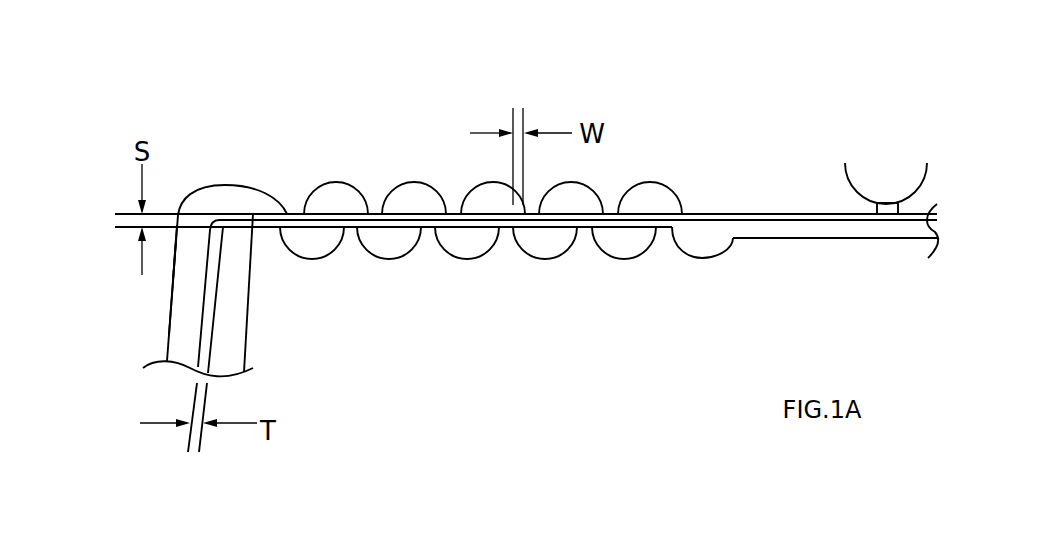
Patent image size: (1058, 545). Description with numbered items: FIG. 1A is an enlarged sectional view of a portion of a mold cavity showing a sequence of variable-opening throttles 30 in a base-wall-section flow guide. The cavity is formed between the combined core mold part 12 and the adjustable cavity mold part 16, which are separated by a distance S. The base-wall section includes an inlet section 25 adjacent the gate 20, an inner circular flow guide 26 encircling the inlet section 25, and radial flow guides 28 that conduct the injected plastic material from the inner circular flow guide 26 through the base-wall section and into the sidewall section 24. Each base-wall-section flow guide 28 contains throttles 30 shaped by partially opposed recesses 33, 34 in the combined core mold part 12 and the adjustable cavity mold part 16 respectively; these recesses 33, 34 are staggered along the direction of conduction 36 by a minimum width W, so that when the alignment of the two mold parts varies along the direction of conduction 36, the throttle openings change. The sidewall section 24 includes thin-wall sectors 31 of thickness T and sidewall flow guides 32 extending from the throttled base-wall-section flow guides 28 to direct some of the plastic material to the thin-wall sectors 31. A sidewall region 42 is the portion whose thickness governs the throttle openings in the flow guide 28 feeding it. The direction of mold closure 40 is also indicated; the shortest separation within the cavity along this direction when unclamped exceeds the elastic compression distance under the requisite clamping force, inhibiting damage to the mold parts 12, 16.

The combined core mold part 12 is at (605, 314).
The adjustable cavity mold part 16 is at (727, 164).
The gate 20 is at (887, 214).
The sidewall section 24 is at (164, 300).
The inlet section 25 is at (763, 238).
The inner circular flow guide 26 is at (695, 258).
The radial flow guide 28 is at (612, 170).
The variable-opening throttle 30 is at (289, 213).
The thin-wall sector 31 is at (212, 350).
The sidewall flow guide 32 is at (183, 263).
The recess in combined core mold part 33 is at (318, 247).
The recess in adjustable cavity mold part 34 is at (268, 197).
The direction of conduction 36 is at (365, 356).
The direction of mold closure 40 is at (778, 160).
The sidewall region 42 is at (170, 327).